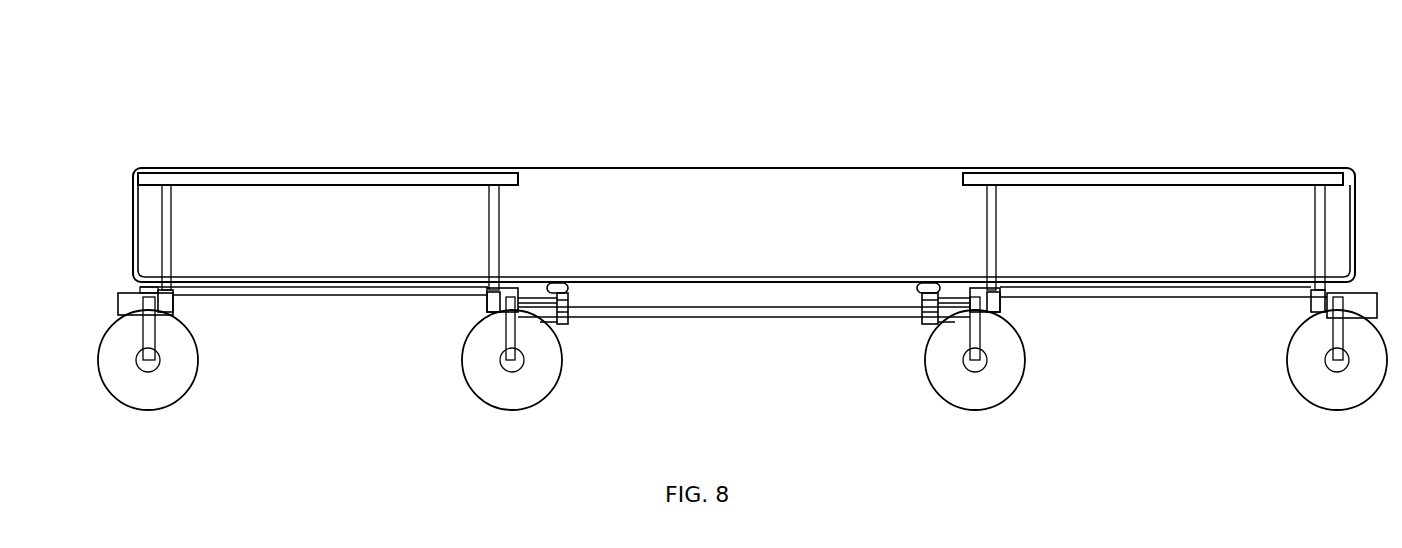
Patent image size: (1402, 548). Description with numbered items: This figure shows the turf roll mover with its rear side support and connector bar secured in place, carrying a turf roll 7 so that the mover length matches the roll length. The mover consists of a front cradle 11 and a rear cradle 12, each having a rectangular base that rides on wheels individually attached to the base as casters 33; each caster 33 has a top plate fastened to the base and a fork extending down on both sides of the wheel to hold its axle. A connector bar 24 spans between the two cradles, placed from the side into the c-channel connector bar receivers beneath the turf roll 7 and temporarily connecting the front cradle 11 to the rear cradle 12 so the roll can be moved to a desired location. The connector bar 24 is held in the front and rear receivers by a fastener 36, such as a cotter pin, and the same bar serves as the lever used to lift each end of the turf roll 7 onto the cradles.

The turf roll 7 is at (673, 187).
The front cradle 11 is at (408, 176).
The rear cradle 12 is at (1166, 176).
The connector bar 24 is at (762, 312).
The caster 33 is at (189, 316).
The fastener 36 is at (580, 293).